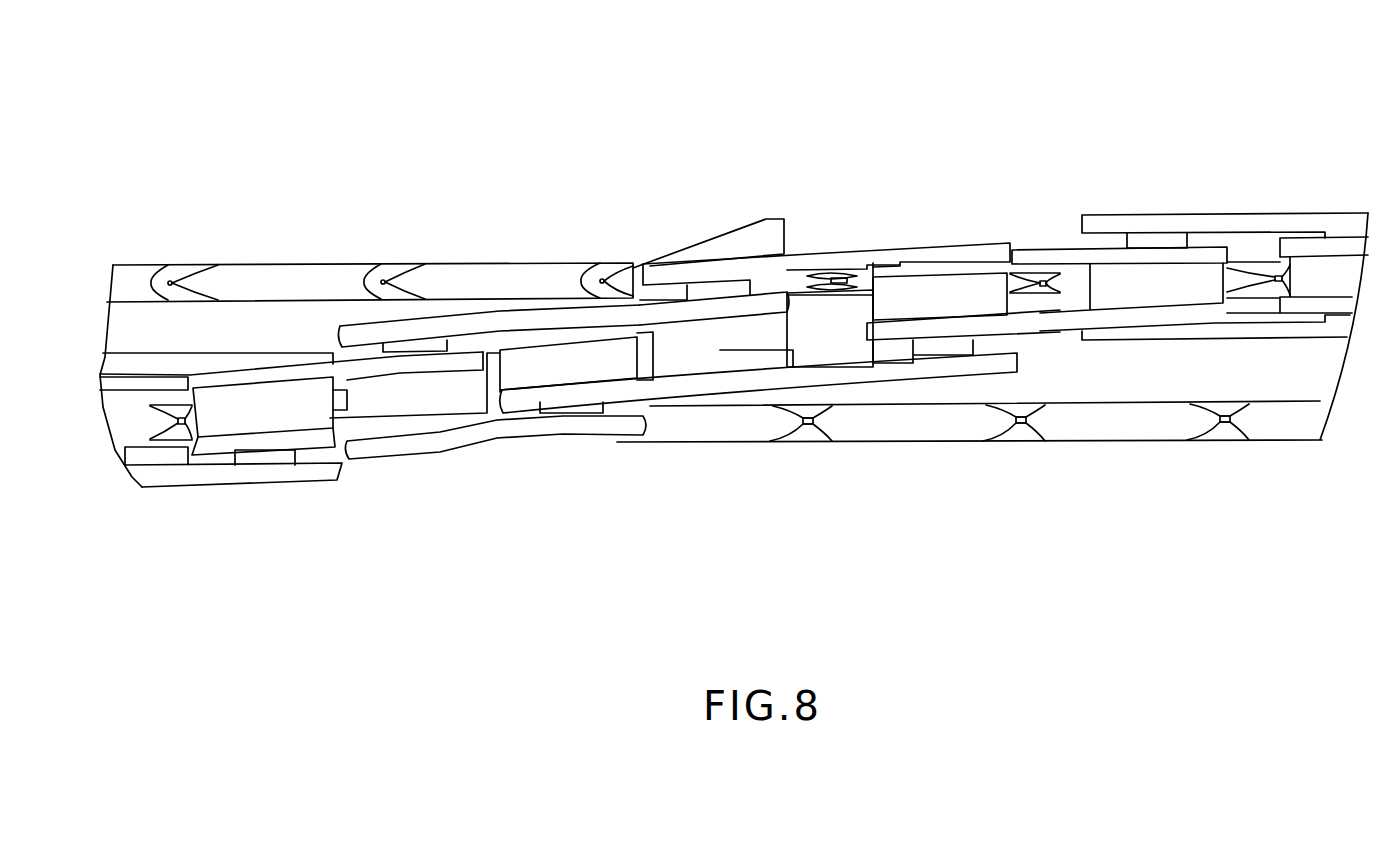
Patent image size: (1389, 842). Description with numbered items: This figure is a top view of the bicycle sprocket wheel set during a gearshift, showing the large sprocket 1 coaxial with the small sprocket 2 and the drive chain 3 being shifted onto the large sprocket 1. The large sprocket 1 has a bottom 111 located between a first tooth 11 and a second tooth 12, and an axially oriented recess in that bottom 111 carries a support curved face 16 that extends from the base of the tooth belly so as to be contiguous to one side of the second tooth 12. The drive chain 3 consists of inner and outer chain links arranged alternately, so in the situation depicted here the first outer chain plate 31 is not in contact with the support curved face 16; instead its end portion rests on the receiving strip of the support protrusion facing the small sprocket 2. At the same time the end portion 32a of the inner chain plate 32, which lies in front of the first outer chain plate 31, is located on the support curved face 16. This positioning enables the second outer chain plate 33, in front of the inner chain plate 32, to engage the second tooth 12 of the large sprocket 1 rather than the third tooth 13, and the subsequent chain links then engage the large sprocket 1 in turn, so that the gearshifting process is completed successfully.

The large sprocket 1 is at (263, 272).
The small sprocket 2 is at (1147, 422).
The drive chain 3 is at (433, 395).
The first tooth 11 is at (607, 272).
The second tooth 12 is at (848, 280).
The third tooth 13 is at (1058, 282).
The support curved face 16 is at (784, 286).
The first outer chain plate 31 is at (480, 332).
The inner chain plate 32 is at (678, 317).
The end portion of the inner chain plate 32a is at (755, 293).
The second outer chain plate 33 is at (927, 258).
The bottom 111 is at (732, 238).